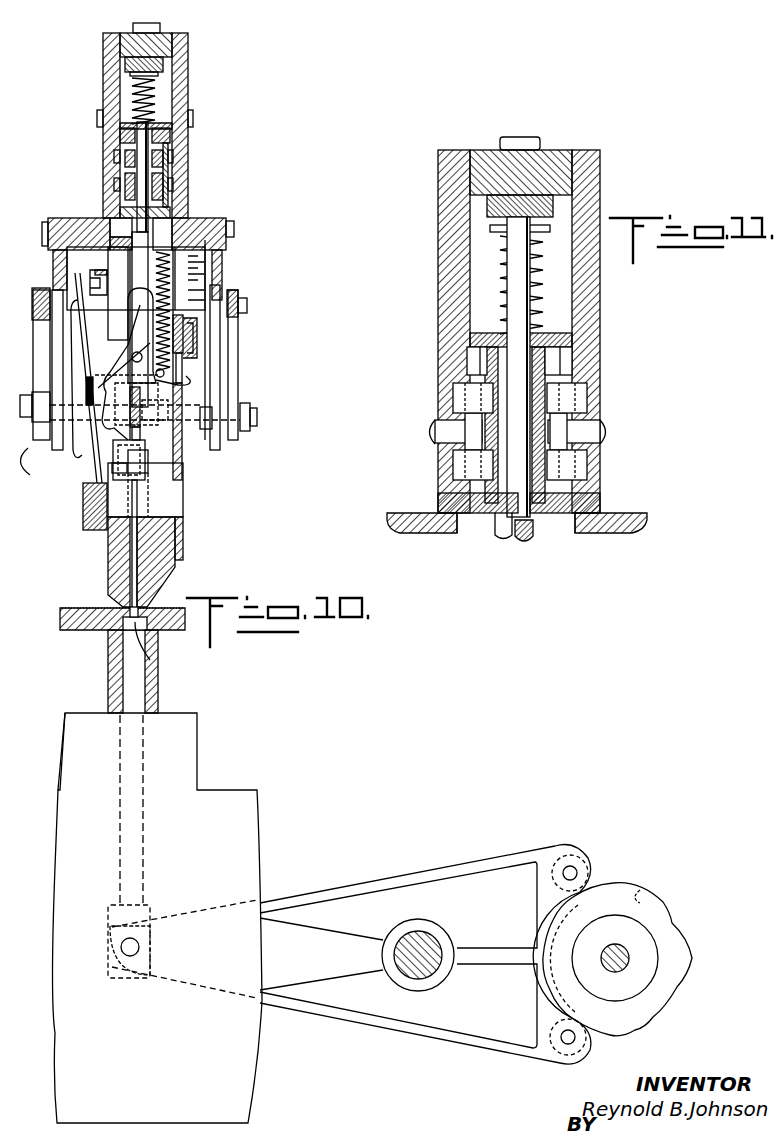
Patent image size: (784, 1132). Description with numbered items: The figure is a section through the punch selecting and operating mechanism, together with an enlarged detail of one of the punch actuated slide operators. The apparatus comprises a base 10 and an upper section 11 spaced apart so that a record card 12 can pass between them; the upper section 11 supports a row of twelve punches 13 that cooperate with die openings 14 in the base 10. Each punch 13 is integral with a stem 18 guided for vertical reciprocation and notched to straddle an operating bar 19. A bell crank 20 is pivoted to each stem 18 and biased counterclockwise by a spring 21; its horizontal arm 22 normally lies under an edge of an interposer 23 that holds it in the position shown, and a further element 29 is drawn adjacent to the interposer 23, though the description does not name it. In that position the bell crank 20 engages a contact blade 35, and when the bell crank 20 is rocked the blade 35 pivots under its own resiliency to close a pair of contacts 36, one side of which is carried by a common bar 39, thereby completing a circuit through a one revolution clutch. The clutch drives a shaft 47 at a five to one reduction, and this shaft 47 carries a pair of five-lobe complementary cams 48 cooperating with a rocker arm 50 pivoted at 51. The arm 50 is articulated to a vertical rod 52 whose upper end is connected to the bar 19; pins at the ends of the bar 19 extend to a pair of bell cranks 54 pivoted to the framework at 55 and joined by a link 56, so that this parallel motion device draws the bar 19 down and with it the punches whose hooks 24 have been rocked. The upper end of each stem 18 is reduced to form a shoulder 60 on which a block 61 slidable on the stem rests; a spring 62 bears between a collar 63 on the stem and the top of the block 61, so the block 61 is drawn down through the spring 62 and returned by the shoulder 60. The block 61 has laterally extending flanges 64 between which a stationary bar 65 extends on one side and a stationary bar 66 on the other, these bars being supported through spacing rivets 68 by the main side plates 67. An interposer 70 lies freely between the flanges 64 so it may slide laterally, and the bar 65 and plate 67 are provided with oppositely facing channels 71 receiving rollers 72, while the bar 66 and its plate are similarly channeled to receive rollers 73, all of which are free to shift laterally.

In FIG. 10, the base 10 is at (198, 738).
In FIG. 10, the upper section 11 is at (160, 548).
In FIG. 10, the record card 12 is at (80, 608).
In FIG. 10, the punch 13 is at (140, 503).
In FIG. 10, the die opening 14 is at (158, 658).
In FIG. 10, the stem 18 is at (150, 270).
In FIG. 11, the stem 18 is at (498, 540).
In FIG. 10, the operating bar 19 is at (140, 428).
In FIG. 10, the bell crank 20 is at (110, 370).
In FIG. 10, the spring 21 is at (172, 280).
In FIG. 10, the horizontal arm 22 is at (190, 385).
In FIG. 10, the interposer 23 is at (185, 372).
In FIG. 10, the hook 24 is at (88, 470).
In FIG. 10, the bracket 29 is at (198, 338).
In FIG. 10, the contact blade 35 is at (100, 298).
In FIG. 10, the contacts 36 is at (55, 260).
In FIG. 10, the common bar 39 is at (100, 222).
In FIG. 10, the shaft 47 is at (628, 955).
In FIG. 10, the five-lobe complementary cams 48 is at (645, 888).
In FIG. 10, the rocker arm 50 is at (440, 872).
In FIG. 10, the pivot 51 is at (440, 942).
In FIG. 10, the vertical rod 52 is at (132, 848).
In FIG. 10, the bell cranks 54 is at (38, 360).
In FIG. 10, the pivot 55 is at (38, 425).
In FIG. 10, the link 56 is at (40, 290).
In FIG. 10, the shoulder 60 is at (120, 205).
In FIG. 11, the shoulder 60 is at (520, 540).
In FIG. 10, the block 61 is at (168, 150).
In FIG. 11, the block 61 is at (555, 372).
In FIG. 10, the spring 62 is at (156, 92).
In FIG. 11, the spring 62 is at (545, 294).
In FIG. 10, the collar 63 is at (158, 74).
In FIG. 11, the collar 63 is at (553, 228).
In FIG. 10, the flanges 64 is at (119, 120).
In FIG. 11, the flanges 64 is at (500, 322).
In FIG. 10, the stationary bar 65 is at (173, 212).
In FIG. 11, the stationary bar 65 is at (560, 496).
In FIG. 10, the stationary bar 66 is at (118, 172).
In FIG. 11, the stationary bar 66 is at (470, 498).
In FIG. 10, the main side plates 67 is at (103, 36).
In FIG. 11, the main side plates 67 is at (438, 196).
In FIG. 11, the spacing rivets 68 is at (440, 432).
In FIG. 10, the interposer 70 is at (103, 142).
In FIG. 11, the interposer 70 is at (470, 363).
In FIG. 10, the channels 71 is at (172, 185).
In FIG. 11, the channels 71 is at (585, 398).
In FIG. 11, the rollers 72 is at (588, 462).
In FIG. 11, the rollers 73 is at (462, 400).